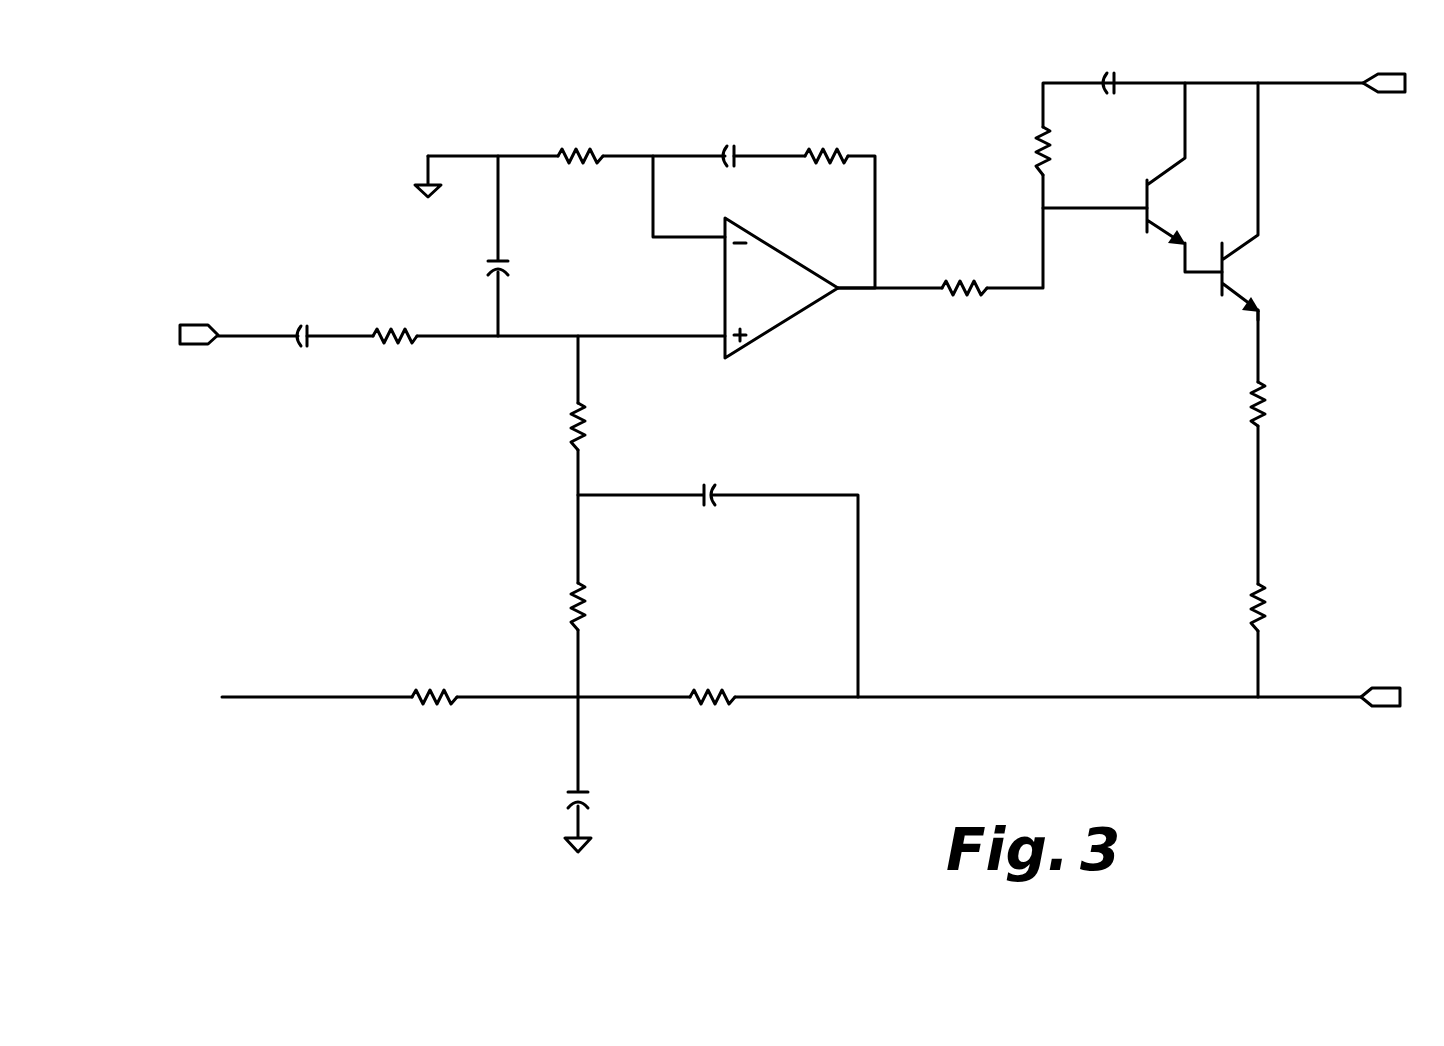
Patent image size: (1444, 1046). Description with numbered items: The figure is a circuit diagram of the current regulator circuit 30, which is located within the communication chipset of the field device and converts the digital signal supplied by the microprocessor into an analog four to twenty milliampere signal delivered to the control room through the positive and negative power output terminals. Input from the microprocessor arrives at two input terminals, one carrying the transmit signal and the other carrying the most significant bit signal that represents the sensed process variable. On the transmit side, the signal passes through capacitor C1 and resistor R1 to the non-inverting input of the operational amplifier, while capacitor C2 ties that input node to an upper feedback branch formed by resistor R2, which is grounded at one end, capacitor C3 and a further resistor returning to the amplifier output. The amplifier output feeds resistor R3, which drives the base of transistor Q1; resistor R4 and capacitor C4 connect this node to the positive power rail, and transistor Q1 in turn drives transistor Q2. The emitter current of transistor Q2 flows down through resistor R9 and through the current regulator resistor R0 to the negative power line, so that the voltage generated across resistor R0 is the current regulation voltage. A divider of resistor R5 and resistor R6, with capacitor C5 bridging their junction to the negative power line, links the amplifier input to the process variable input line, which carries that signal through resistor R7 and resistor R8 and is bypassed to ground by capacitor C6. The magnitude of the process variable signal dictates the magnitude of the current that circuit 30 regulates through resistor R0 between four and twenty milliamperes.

The current regulator circuit 30 is at (326, 233).
The capacitor C1 is at (307, 315).
The resistor R1 is at (395, 314).
The capacitor C2 is at (515, 266).
The resistor R2 is at (580, 136).
The capacitor C3 is at (733, 137).
The resistor R3 is at (960, 270).
The resistor R4 is at (1026, 156).
The capacitor C4 is at (1106, 67).
The transistor Q1 is at (1184, 177).
The transistor Q2 is at (1250, 201).
The resistor R9 is at (1237, 399).
The current regulator resistor R0 is at (1234, 605).
The resistor R5 is at (554, 424).
The resistor R6 is at (559, 604).
The capacitor C5 is at (709, 474).
The resistor R7 is at (434, 674).
The resistor R8 is at (712, 679).
The capacitor C6 is at (596, 793).